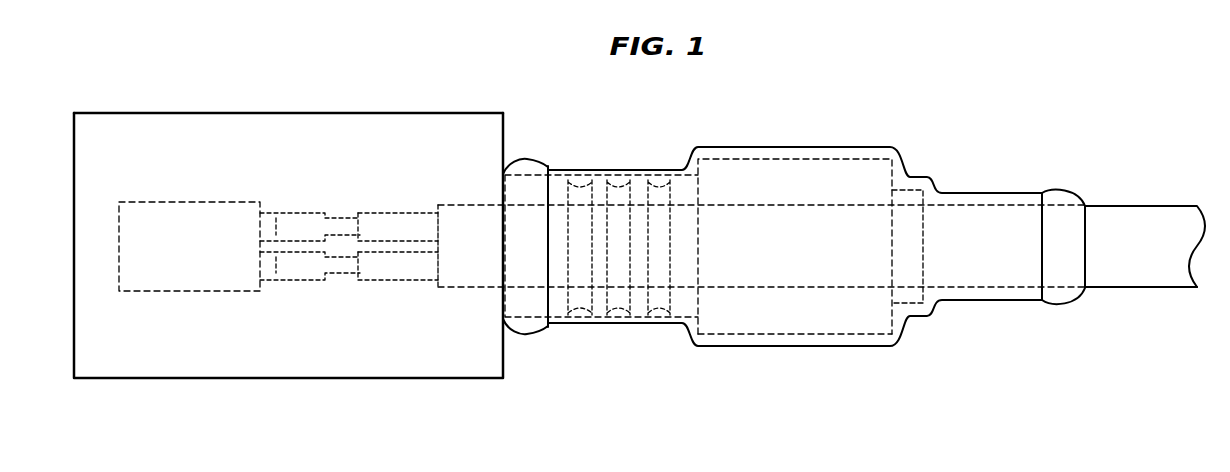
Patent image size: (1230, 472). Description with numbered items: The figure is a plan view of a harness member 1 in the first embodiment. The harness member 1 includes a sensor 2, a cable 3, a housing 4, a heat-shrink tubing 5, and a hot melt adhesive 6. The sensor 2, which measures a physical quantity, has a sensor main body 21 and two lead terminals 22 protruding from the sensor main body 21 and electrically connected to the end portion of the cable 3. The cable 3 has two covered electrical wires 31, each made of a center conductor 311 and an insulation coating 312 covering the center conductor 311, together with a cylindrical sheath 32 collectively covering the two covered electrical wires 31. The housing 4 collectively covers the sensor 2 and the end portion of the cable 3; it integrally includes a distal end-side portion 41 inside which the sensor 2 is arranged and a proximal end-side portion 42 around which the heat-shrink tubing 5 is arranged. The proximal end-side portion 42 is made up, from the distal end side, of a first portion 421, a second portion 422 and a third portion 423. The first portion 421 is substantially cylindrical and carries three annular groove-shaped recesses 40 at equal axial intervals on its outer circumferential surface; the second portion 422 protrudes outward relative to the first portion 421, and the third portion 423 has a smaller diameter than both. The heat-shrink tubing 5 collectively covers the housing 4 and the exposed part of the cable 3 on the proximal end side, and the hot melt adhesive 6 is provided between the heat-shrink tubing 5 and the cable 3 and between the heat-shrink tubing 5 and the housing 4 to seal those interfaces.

The harness member 1 is at (1152, 129).
The sensor 2 is at (93, 257).
The sensor main body 21 is at (117, 233).
The lead terminals 22 is at (281, 213).
The cable 3 is at (1141, 206).
The covered electrical wire 31 is at (425, 213).
The center conductor 311 is at (335, 217).
The insulation coating 312 is at (381, 213).
The sheath 32 is at (1143, 288).
The housing 4 is at (118, 113).
The distal end-side portion 41 is at (168, 113).
The recesses 40 is at (660, 185).
The proximal end-side portion 42 is at (796, 159).
The first portion 421 is at (602, 320).
The second portion 422 is at (802, 335).
The third portion 423 is at (920, 303).
The heat-shrink tubing 5 is at (839, 183).
The hot melt adhesive 6 is at (534, 196).